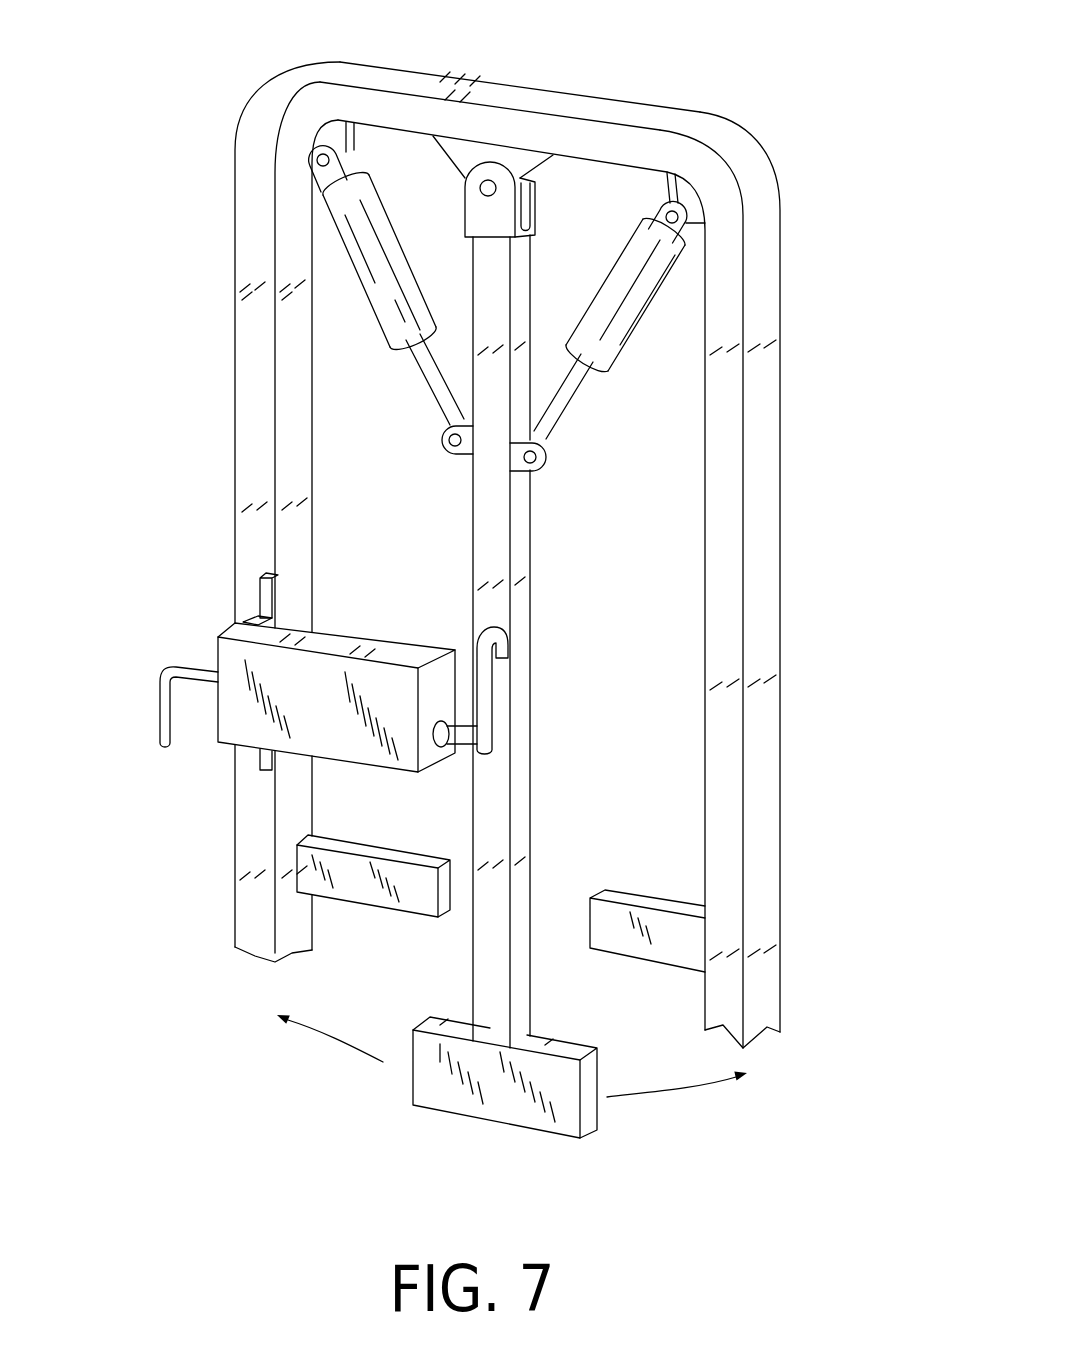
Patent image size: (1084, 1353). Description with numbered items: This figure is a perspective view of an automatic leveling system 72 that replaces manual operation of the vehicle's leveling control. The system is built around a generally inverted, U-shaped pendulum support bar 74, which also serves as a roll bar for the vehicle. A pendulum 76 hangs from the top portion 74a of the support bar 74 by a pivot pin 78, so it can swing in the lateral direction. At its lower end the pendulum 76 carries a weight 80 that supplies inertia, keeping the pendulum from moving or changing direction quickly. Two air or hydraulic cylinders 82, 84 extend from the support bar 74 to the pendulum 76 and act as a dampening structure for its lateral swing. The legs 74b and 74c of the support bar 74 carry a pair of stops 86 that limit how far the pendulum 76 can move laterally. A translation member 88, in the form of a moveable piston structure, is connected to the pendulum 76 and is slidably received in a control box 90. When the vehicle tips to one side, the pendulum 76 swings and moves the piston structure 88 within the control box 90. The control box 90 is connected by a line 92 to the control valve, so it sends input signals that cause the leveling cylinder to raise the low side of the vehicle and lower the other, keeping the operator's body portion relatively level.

The automatic leveling system 72 is at (210, 100).
The pendulum support bar 74 is at (768, 333).
The top portion 74a is at (627, 113).
The leg 74b is at (247, 515).
The leg 74c is at (765, 562).
The pendulum 76 is at (523, 525).
The pivot pin 78 is at (490, 182).
The weight 80 is at (465, 1085).
The air or hydraulic cylinder 82 is at (375, 280).
The air or hydraulic cylinder 84 is at (625, 315).
The stops 86 is at (357, 885).
The translation member 88 is at (470, 665).
The control box 90 is at (352, 630).
The line 92 is at (173, 678).